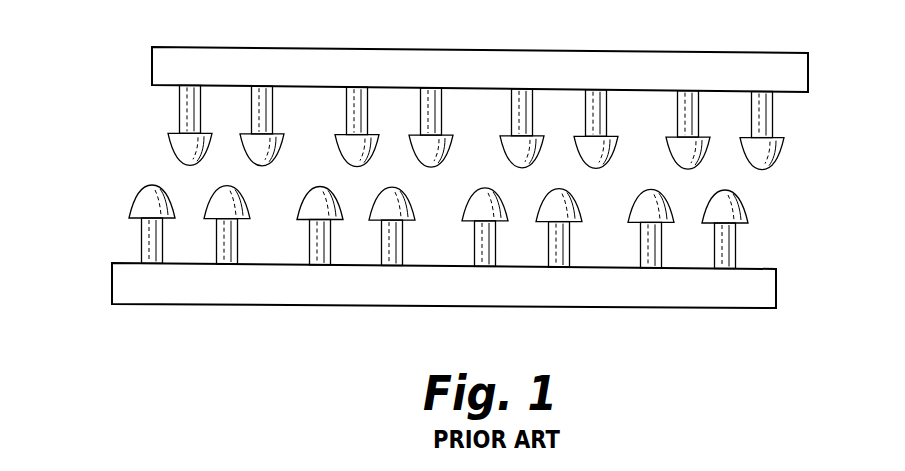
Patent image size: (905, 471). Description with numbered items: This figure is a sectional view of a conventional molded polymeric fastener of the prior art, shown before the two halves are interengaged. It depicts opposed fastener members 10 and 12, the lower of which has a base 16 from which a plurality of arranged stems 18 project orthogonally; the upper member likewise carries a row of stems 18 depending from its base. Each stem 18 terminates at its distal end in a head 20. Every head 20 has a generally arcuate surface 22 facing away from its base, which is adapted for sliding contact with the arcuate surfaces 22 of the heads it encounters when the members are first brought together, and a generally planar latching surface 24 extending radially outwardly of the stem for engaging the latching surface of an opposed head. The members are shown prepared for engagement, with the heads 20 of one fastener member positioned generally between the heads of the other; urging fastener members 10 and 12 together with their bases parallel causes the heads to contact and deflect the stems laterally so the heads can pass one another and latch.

The fastener member 10 is at (420, 84).
The fastener member 12 is at (394, 260).
The base 16 is at (675, 295).
The stem 18 is at (760, 117).
The head 20 is at (760, 157).
The arcuate surface 22 is at (153, 185).
The latching surface 24 is at (173, 133).